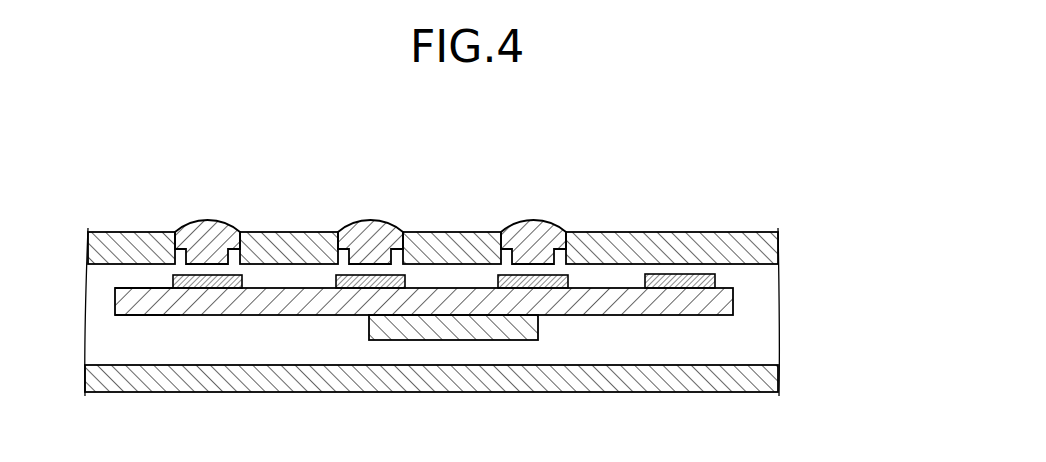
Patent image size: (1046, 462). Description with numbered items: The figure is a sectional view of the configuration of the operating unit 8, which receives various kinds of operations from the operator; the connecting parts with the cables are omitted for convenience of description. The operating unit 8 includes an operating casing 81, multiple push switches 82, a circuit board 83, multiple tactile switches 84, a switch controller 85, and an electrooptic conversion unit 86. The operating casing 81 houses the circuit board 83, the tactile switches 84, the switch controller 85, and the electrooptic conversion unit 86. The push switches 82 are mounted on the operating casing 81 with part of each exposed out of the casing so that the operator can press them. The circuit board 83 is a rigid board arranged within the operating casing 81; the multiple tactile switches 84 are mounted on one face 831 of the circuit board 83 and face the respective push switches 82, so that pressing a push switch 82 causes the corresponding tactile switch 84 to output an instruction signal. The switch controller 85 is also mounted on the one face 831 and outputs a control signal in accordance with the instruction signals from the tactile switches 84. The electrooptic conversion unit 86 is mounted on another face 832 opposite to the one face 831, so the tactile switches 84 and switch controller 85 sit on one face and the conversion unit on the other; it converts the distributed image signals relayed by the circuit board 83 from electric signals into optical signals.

The operating unit 8 is at (591, 184).
The operating casing 81 is at (742, 242).
The push switches 82 is at (530, 220).
The circuit board 83 is at (727, 295).
The one face 831 is at (127, 288).
The another face 832 is at (128, 315).
The tactile switches 84 is at (205, 288).
The switch controller 85 is at (676, 288).
The electrooptic conversion unit 86 is at (449, 340).